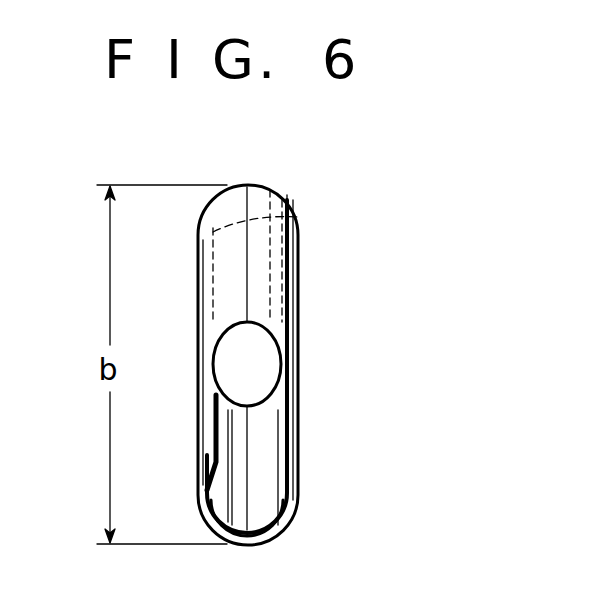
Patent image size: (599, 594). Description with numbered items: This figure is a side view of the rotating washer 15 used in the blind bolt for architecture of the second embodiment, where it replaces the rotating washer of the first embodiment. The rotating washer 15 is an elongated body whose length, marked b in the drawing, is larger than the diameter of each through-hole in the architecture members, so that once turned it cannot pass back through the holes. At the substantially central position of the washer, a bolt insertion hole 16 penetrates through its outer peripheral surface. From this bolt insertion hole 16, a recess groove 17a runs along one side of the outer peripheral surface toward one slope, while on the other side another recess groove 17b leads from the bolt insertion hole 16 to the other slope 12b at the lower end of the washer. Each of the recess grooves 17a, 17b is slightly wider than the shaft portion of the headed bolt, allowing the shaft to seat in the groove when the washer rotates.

The rotating washer 15 is at (299, 287).
The bolt insertion hole 16 is at (255, 367).
The recess groove 17a is at (300, 216).
The recess groove 17b is at (218, 430).
The slope 12b is at (296, 520).